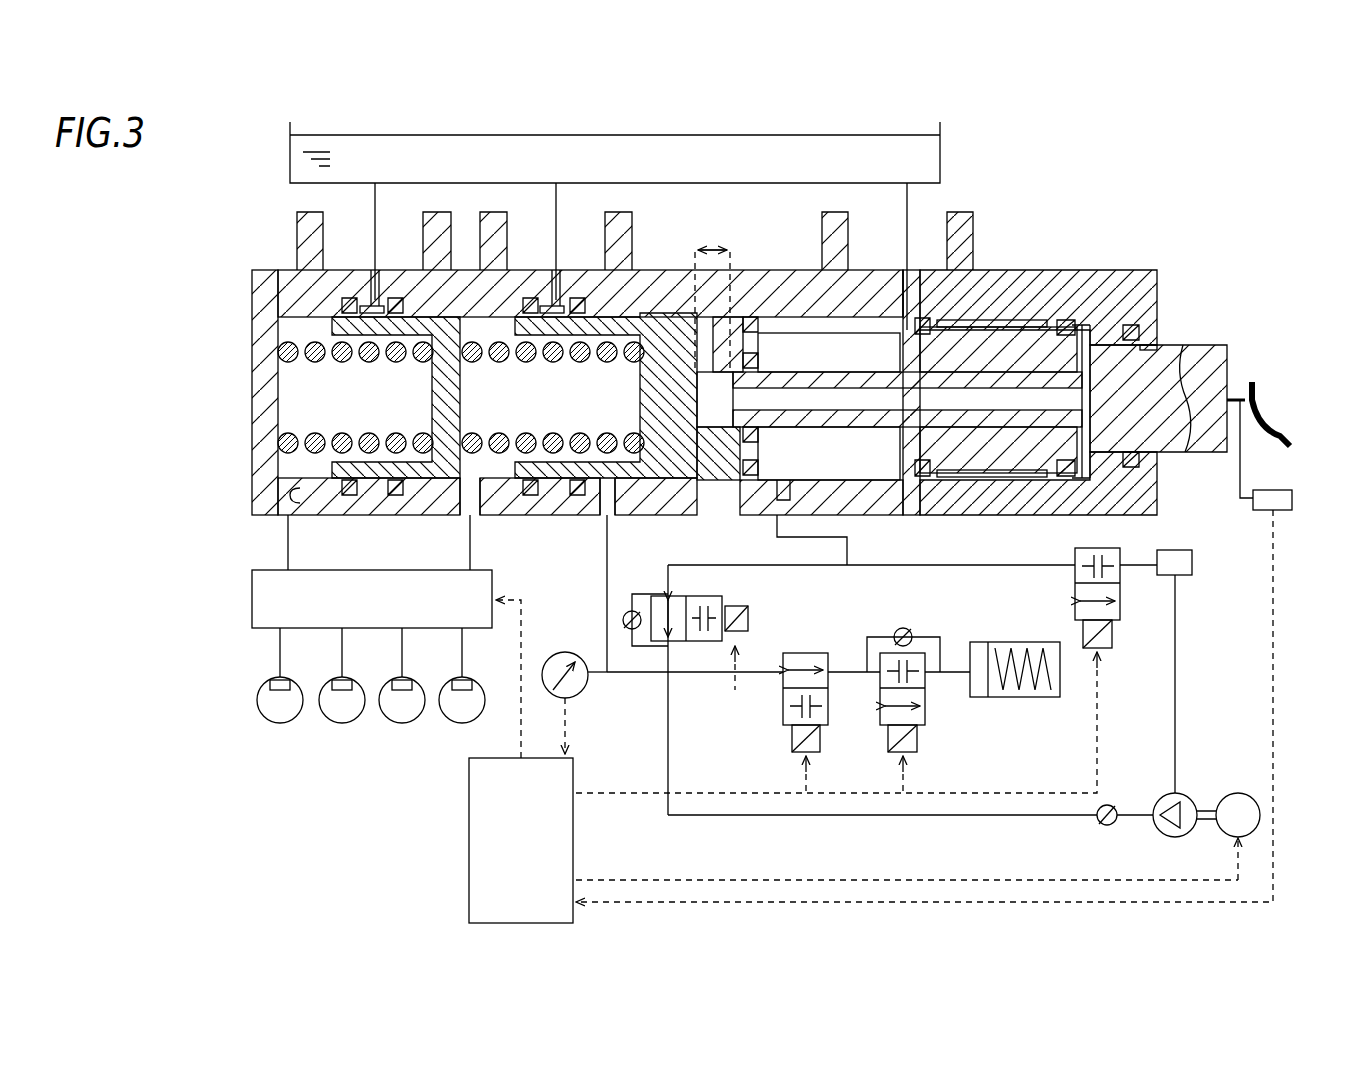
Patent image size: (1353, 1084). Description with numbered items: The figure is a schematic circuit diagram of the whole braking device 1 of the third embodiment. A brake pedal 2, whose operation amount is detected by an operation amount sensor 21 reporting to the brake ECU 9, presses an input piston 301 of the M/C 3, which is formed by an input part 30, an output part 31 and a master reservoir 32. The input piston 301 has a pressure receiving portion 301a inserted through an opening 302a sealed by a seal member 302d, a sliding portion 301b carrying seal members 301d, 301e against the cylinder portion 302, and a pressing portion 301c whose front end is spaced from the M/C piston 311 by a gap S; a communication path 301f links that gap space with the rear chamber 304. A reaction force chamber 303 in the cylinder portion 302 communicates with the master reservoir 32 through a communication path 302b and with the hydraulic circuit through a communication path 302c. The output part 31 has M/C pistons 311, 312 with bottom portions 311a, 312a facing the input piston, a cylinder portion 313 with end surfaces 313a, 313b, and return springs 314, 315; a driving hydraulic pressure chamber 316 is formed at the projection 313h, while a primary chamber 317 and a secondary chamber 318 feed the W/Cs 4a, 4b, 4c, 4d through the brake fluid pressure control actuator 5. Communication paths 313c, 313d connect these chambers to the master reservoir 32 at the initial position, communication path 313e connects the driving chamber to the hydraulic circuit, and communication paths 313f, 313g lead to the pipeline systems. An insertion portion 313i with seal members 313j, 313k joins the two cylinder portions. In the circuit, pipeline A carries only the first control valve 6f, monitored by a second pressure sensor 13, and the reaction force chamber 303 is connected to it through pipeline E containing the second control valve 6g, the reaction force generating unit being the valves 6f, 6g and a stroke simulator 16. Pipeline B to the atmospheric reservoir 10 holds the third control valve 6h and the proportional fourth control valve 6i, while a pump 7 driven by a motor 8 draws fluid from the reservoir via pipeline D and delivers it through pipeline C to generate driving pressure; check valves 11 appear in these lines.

The braking device 1 is at (1300, 205).
The brake pedal 2 is at (1296, 428).
The M/C 3 is at (992, 206).
The W/C 4a is at (290, 680).
The W/C 4b is at (352, 680).
The W/C 4c is at (412, 680).
The W/C 4d is at (472, 680).
The brake fluid pressure control actuator 5 is at (252, 600).
The first control valve 6f is at (828, 725).
The second control valve 6g is at (925, 725).
The third control valve 6h is at (1120, 620).
The fourth control valve 6i is at (692, 596).
The pump 7 is at (1185, 795).
The motor 8 is at (1240, 793).
The brake ECU 9 is at (469, 787).
The atmospheric reservoir 10 is at (1165, 576).
The check valve 11 is at (628, 630).
The second pressure sensor 13 is at (560, 652).
The stroke simulator 16 is at (1030, 640).
The operation amount sensor 21 is at (1292, 500).
The input part 30 is at (1125, 262).
The output part 31 is at (270, 262).
The master reservoir 32 is at (940, 148).
The input piston 301 is at (1157, 432).
The pressure receiving portion 301a is at (1208, 454).
The sliding portion 301b is at (1012, 335).
The pressing portion 301c is at (866, 370).
The seal member 301d is at (935, 328).
The seal member 301e is at (1066, 322).
The communication path 301f is at (1095, 478).
The cylinder portion 302 is at (1130, 290).
The opening 302a is at (1160, 345).
The communication path 302b is at (922, 335).
The communication path 302c is at (792, 505).
The seal member 302d is at (1150, 320).
The reaction force chamber 303 is at (836, 335).
The rear chamber 304 is at (1082, 500).
The M/C piston 311 is at (660, 425).
The bottom portion 311a is at (632, 470).
The M/C piston 312 is at (440, 455).
The bottom portion 312a is at (448, 330).
The cylinder portion 313 is at (286, 290).
The end surface 313a is at (750, 478).
The end surface 313b is at (262, 453).
The communication path 313c is at (563, 300).
The communication path 313d is at (380, 300).
The communication path 313e is at (607, 560).
The communication path 313f is at (476, 517).
The communication path 313g is at (324, 515).
The projection 313h is at (745, 440).
The insertion portion 313i is at (755, 355).
The seal member 313j is at (748, 320).
The seal member 313k is at (778, 350).
The return spring 314 is at (578, 492).
The return spring 315 is at (376, 492).
The driving hydraulic pressure chamber 316 is at (718, 478).
The primary chamber 317 is at (517, 405).
The secondary chamber 318 is at (298, 397).
The pipeline A is at (606, 618).
The pipeline B is at (1030, 565).
The pipeline C is at (1040, 818).
The pipeline D is at (1178, 666).
The pipeline E is at (968, 660).
The gap S is at (712, 297).